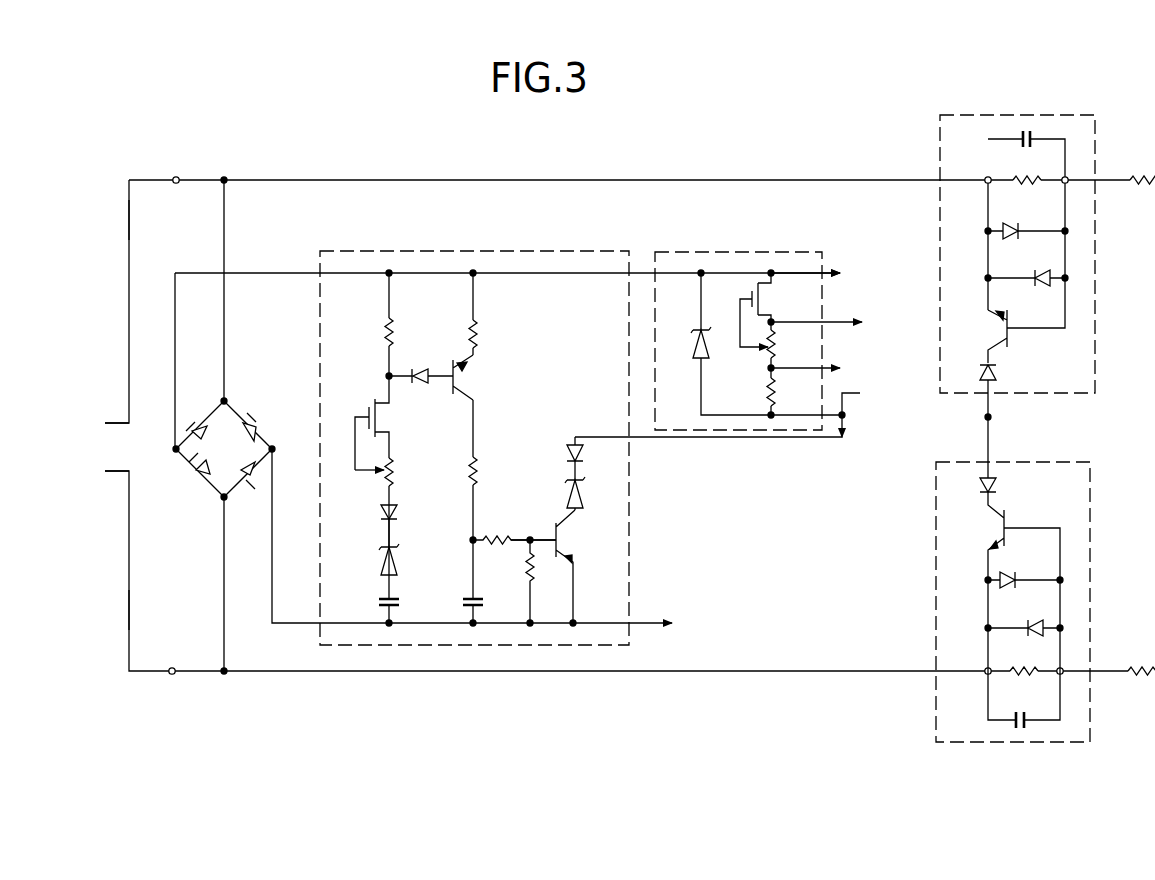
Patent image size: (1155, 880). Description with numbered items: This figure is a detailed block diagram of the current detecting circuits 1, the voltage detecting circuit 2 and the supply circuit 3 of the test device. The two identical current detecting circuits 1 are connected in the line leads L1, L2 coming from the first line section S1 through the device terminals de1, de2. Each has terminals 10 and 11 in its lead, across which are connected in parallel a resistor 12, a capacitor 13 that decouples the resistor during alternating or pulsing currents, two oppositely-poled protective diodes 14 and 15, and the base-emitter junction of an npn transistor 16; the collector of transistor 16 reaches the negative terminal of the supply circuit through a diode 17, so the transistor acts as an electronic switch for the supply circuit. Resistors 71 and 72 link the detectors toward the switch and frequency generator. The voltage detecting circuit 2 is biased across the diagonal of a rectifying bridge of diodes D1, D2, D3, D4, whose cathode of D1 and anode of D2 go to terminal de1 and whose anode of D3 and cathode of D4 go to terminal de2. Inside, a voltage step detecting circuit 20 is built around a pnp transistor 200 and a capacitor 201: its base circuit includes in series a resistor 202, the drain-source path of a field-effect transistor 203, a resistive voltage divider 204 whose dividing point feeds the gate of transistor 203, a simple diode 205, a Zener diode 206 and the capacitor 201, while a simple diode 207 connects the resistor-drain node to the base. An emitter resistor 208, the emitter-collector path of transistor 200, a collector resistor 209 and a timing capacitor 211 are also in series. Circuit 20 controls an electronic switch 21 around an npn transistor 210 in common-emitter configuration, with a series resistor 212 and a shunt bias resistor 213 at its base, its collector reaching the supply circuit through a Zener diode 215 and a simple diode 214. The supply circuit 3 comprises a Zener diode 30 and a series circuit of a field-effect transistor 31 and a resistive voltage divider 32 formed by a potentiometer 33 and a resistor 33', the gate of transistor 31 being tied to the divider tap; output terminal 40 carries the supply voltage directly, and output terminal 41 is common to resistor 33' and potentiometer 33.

The current detecting circuit 1 is at (940, 122).
The voltage detecting circuit 2 is at (455, 251).
The supply circuit 3 is at (720, 252).
The terminal 10 is at (985, 177).
The terminal 11 is at (1067, 176).
The resistor 12 is at (1024, 174).
The capacitor 13 is at (1022, 149).
The diode 14 is at (1020, 224).
The diode 15 is at (1033, 272).
The npn bipolar transistor 16 is at (1004, 330).
The diode 17 is at (998, 376).
The voltage step detecting circuit 20 is at (411, 549).
The electronic switch 21 is at (503, 512).
The Zener diode 30 is at (694, 346).
The field-effect transistor 31 is at (764, 300).
The resistive voltage divider 32 is at (766, 356).
The potentiometer 33 is at (786, 344).
The resistor 33' is at (788, 392).
The output terminal 40 is at (840, 270).
The output terminal 41 is at (840, 365).
The resistor 71 is at (1138, 665).
The resistor 72 is at (1140, 186).
The pnp bipolar transistor 200 is at (470, 377).
The capacitor 201 is at (376, 604).
The resistor 202 is at (384, 332).
The field-effect transistor 203 is at (380, 418).
The resistive voltage divider 204 is at (368, 482).
The simple diode 205 is at (397, 512).
The Zener diode 206 is at (380, 562).
The simple diode 207 is at (422, 368).
The emitter resistor 208 is at (478, 330).
The collector resistor 209 is at (478, 468).
The npn bipolar transistor 210 is at (562, 540).
The timing capacitor 211 is at (460, 604).
The series resistor 212 is at (514, 552).
The shunt bias resistor 213 is at (536, 566).
The simple diode 214 is at (570, 437).
The Zener diode 215 is at (580, 494).
The diode D1 is at (250, 422).
The diode D2 is at (200, 416).
The diode D3 is at (198, 476).
The diode D4 is at (248, 480).
The line lead L1 is at (131, 222).
The line lead L2 is at (131, 612).
The first line section S1 is at (116, 447).
The terminal de1 is at (176, 176).
The terminal de2 is at (172, 675).